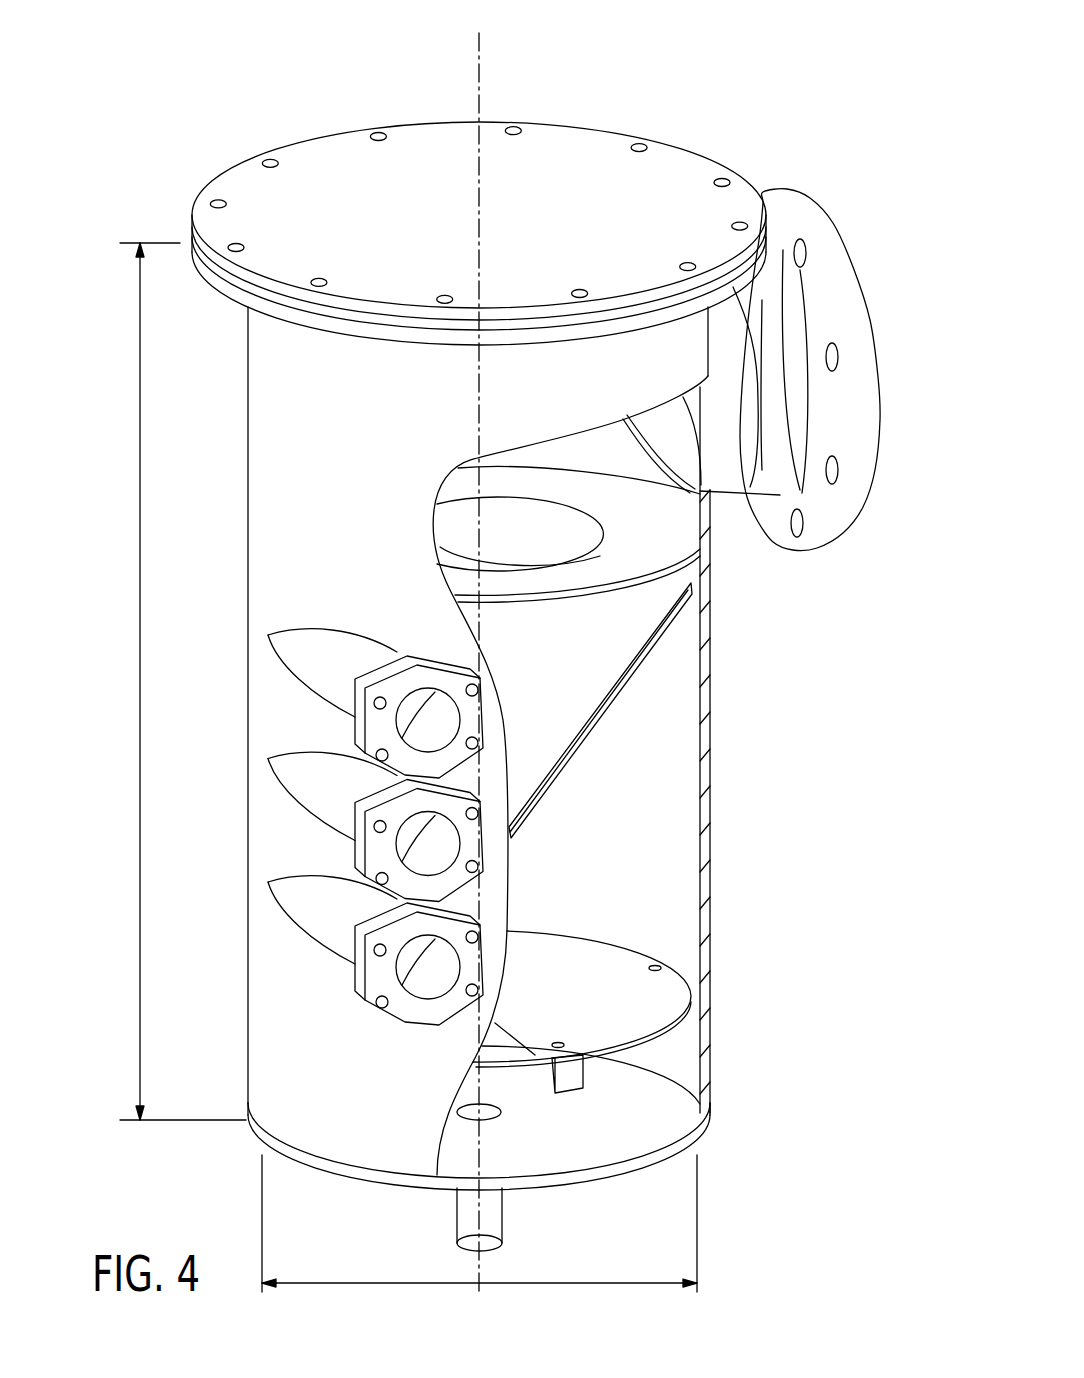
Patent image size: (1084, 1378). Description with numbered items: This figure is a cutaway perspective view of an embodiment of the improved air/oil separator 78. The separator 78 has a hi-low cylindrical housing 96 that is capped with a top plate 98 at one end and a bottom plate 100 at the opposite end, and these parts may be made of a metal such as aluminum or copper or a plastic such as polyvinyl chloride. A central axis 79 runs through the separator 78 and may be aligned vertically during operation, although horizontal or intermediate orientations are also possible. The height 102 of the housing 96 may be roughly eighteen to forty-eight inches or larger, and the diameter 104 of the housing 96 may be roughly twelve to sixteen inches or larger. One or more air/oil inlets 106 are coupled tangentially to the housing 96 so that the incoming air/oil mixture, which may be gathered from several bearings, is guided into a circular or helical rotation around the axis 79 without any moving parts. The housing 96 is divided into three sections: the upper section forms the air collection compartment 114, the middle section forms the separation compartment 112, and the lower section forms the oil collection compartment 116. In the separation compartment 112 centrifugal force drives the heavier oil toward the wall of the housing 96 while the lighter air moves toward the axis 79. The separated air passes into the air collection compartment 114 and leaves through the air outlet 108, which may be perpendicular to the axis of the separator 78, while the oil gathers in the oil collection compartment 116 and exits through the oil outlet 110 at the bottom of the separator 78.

The air/oil separator 78 is at (630, 82).
The axis 79 is at (481, 43).
The cylindrical housing 96 is at (712, 766).
The top plate 98 is at (338, 156).
The bottom plate 100 is at (663, 1157).
The height 102 is at (141, 681).
The diameter 104 is at (412, 1283).
The air/oil inlet 106 is at (296, 652).
The air outlet 108 is at (828, 250).
The oil outlet 110 is at (493, 1208).
The separation compartment 112 is at (668, 689).
The air collection compartment 114 is at (622, 461).
The oil collection compartment 116 is at (678, 1052).